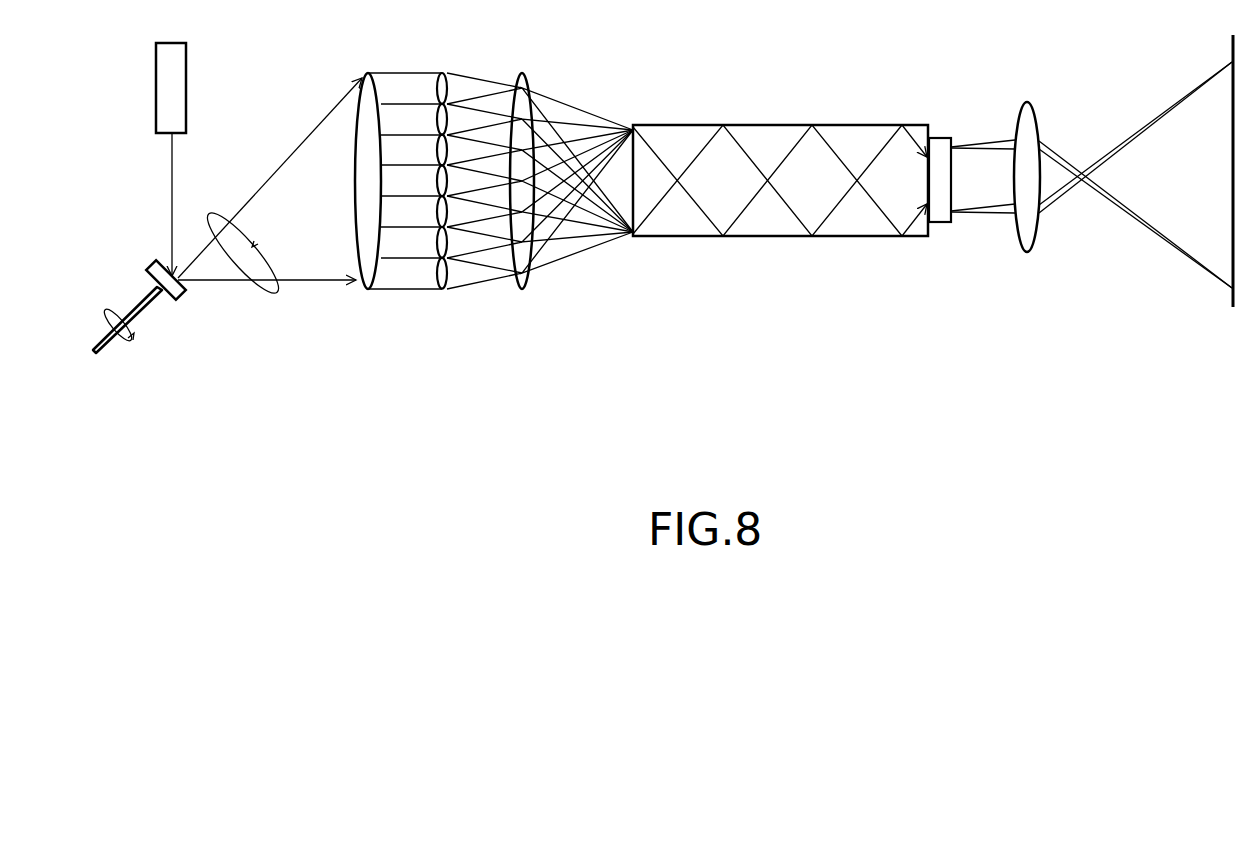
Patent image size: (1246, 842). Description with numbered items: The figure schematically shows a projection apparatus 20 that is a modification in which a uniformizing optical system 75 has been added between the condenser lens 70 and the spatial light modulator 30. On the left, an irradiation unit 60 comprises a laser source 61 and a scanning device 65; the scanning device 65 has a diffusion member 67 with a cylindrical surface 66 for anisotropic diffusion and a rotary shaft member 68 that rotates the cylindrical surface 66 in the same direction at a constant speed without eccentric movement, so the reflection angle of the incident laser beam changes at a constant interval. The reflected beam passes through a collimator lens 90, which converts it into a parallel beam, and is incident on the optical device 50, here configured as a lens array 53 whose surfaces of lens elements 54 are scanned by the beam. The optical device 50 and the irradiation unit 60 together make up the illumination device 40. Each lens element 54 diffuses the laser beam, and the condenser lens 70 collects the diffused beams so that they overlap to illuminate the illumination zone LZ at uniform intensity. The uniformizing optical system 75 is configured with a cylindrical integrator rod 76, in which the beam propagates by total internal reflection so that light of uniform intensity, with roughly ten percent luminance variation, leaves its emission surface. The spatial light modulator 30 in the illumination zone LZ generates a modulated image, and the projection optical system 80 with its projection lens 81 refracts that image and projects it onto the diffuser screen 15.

The diffuser screen 15 is at (1232, 297).
The projection apparatus 20 is at (191, 437).
The spatial light modulator 30 is at (937, 225).
The illumination device 40 is at (540, 424).
The optical device 50 is at (470, 347).
The lens array 53 is at (442, 292).
The lens element 54 is at (437, 272).
The irradiation unit 60 is at (340, 385).
The laser source 61 is at (186, 90).
The scanning device 65 is at (233, 354).
The cylindrical surface 66 is at (152, 264).
The diffusion member 67 is at (185, 295).
The rotary shaft member 68 is at (153, 303).
The condenser lens 70 is at (522, 290).
The uniformizing optical system 75 is at (678, 238).
The integrator rod 76 is at (780, 180).
The projection optical system 80 is at (1092, 297).
The projection lens 81 is at (1027, 252).
The collimator lens 90 is at (368, 290).
The illumination zone LZ is at (924, 209).